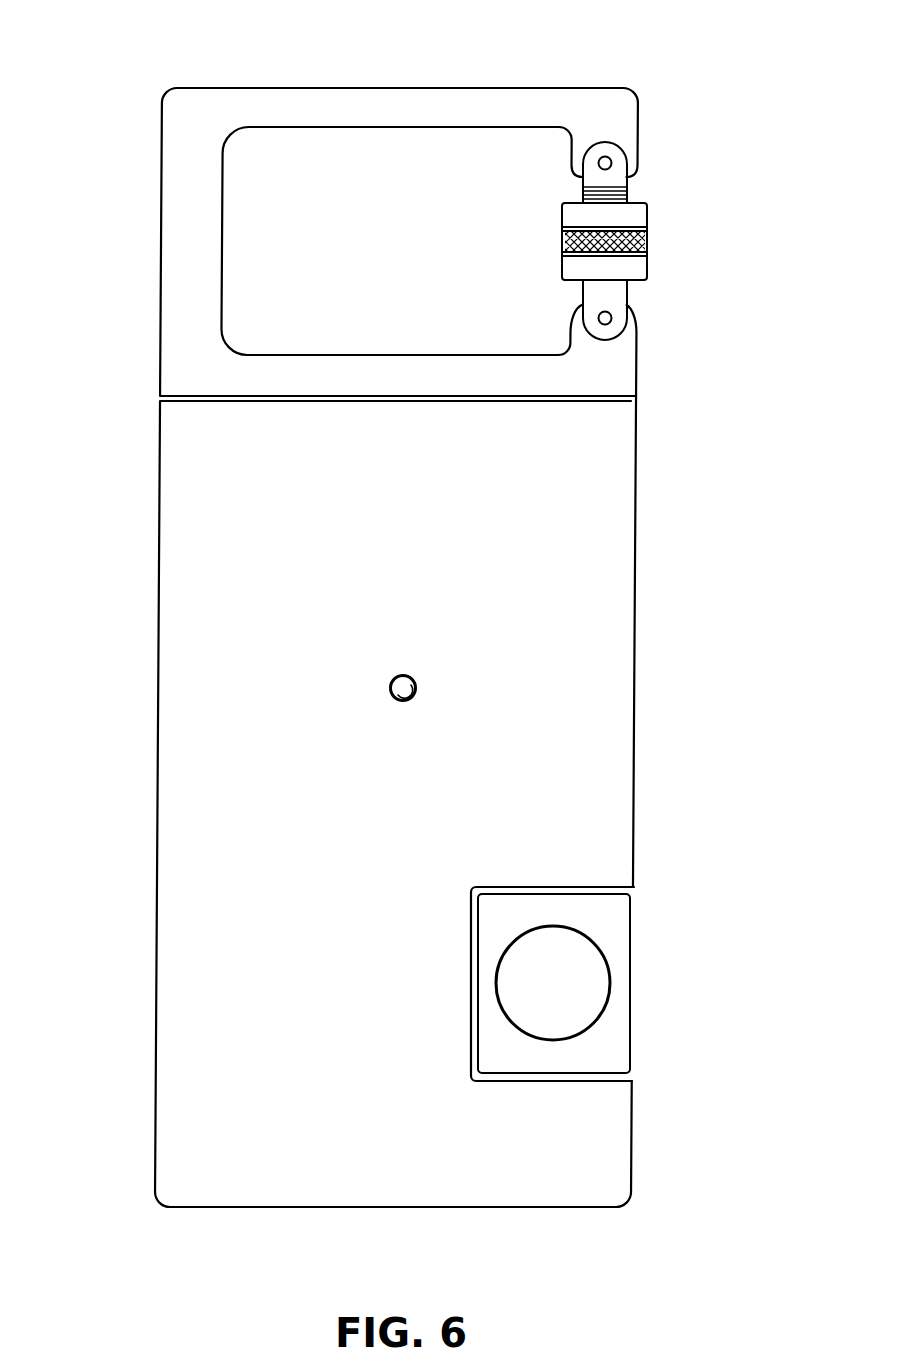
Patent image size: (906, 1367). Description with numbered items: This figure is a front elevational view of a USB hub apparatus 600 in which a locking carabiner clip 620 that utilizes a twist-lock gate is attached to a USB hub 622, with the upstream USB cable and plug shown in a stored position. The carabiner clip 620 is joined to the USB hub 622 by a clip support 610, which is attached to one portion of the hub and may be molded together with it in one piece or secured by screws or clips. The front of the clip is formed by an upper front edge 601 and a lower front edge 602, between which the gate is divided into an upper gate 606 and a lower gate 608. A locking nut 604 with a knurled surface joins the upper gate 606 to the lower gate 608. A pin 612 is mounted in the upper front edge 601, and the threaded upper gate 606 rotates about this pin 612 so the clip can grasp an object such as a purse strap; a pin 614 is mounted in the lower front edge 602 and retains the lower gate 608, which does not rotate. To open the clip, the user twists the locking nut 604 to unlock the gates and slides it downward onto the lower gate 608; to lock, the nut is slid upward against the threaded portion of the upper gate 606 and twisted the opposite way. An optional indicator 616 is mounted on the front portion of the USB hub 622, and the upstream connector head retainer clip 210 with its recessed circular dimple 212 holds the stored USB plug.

The USB hub apparatus 600 is at (173, 58).
The upper front edge 601 is at (639, 128).
The lower front edge 602 is at (570, 335).
The locking nut 604 is at (652, 242).
The upper gate 606 is at (628, 190).
The lower gate 608 is at (629, 292).
The clip support 610 is at (639, 370).
The pin 612 is at (605, 155).
The pin 614 is at (612, 319).
The indicator 616 is at (401, 676).
The locking carabiner clip 620 is at (388, 87).
The USB hub 622 is at (525, 1196).
The upstream connector head retainer clip 210 is at (634, 983).
The dimple 212 is at (560, 967).